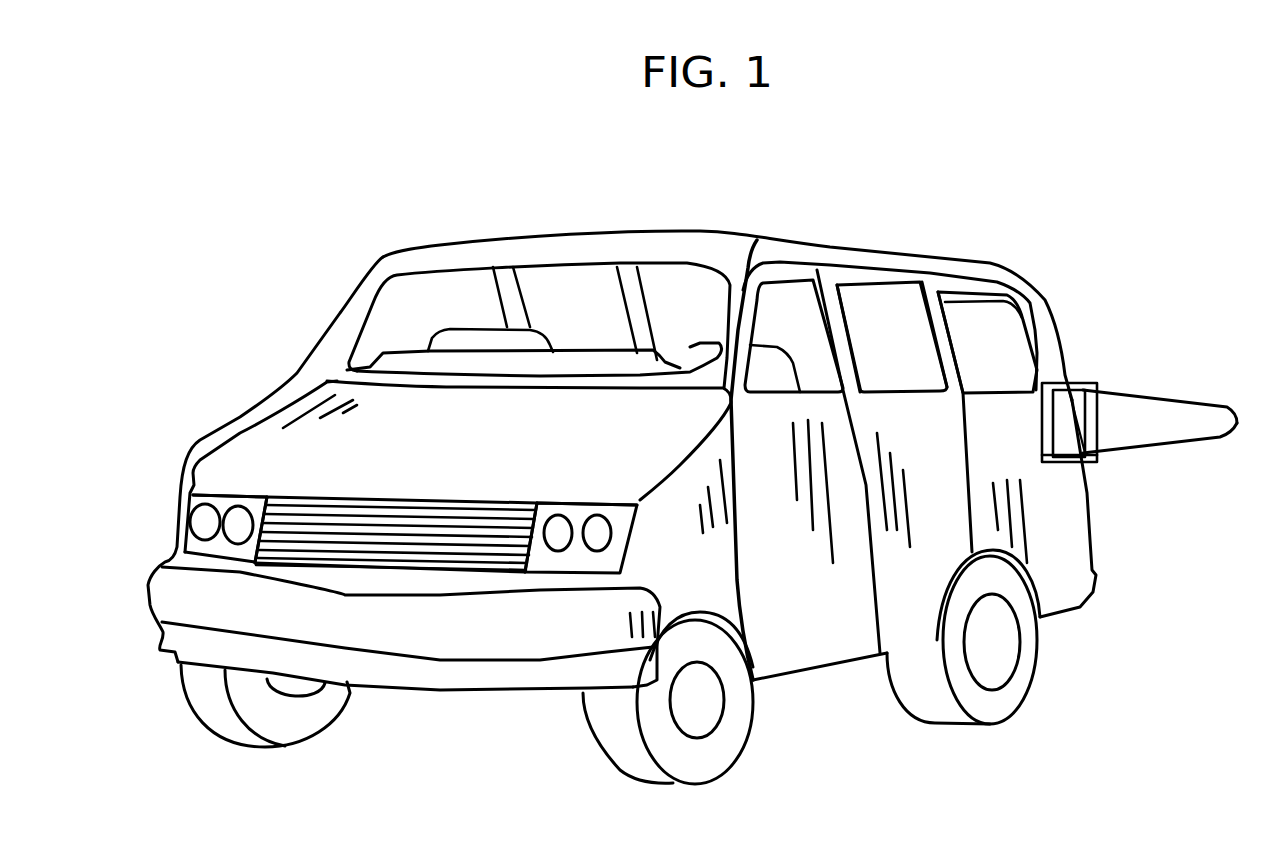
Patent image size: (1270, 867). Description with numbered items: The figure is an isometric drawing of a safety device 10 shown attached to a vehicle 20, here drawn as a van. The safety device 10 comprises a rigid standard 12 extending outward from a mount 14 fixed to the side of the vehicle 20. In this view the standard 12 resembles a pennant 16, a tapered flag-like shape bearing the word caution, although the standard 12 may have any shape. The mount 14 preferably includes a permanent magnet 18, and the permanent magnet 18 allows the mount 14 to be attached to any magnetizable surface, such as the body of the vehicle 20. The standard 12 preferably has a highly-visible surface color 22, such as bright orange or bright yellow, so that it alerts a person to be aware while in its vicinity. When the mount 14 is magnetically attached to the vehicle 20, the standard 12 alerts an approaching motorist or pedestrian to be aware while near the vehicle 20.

The safety device 10 is at (1147, 250).
The rigid standard 12 is at (1223, 437).
The mount 14 is at (1070, 387).
The pennant 16 is at (1222, 410).
The permanent magnet 18 is at (1047, 455).
The vehicle 20 is at (993, 262).
The highly-visible surface color 22 is at (1165, 450).